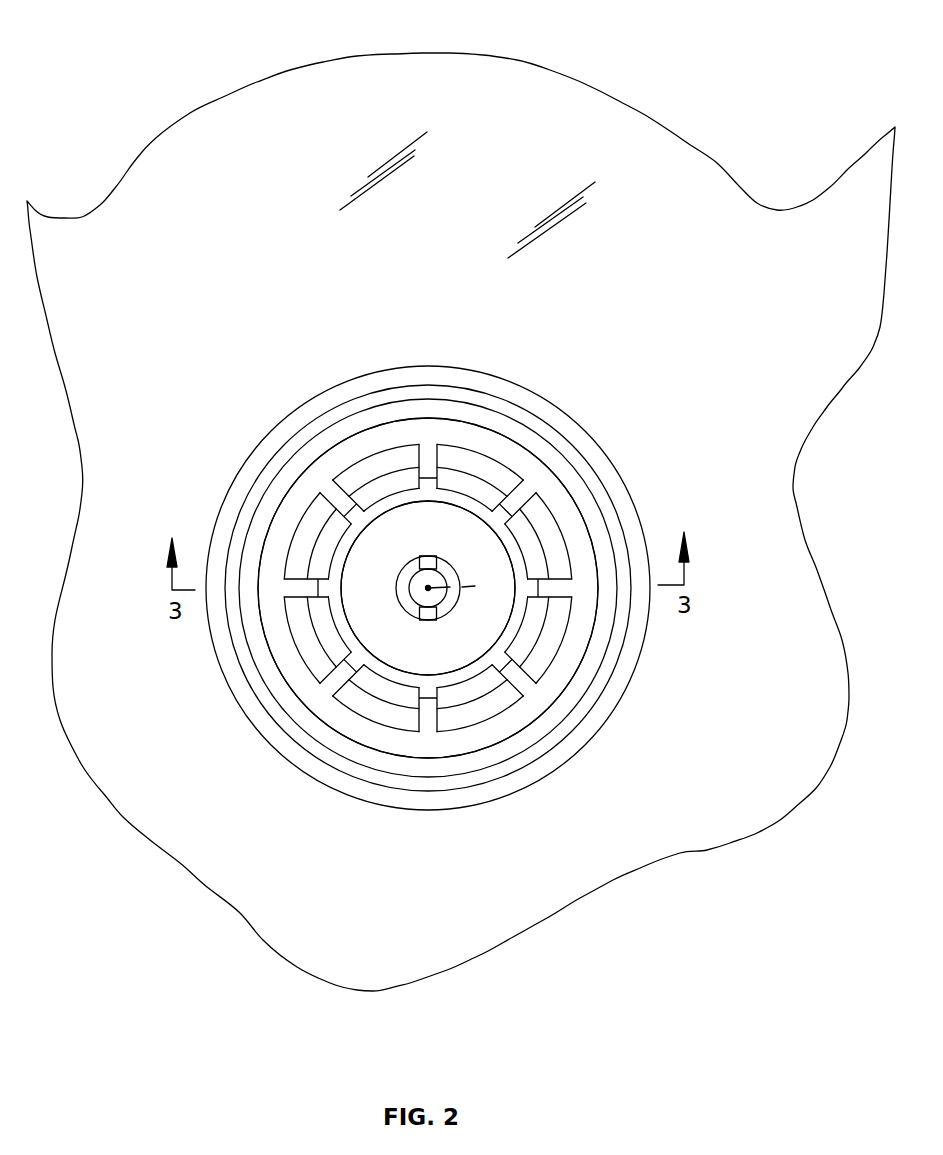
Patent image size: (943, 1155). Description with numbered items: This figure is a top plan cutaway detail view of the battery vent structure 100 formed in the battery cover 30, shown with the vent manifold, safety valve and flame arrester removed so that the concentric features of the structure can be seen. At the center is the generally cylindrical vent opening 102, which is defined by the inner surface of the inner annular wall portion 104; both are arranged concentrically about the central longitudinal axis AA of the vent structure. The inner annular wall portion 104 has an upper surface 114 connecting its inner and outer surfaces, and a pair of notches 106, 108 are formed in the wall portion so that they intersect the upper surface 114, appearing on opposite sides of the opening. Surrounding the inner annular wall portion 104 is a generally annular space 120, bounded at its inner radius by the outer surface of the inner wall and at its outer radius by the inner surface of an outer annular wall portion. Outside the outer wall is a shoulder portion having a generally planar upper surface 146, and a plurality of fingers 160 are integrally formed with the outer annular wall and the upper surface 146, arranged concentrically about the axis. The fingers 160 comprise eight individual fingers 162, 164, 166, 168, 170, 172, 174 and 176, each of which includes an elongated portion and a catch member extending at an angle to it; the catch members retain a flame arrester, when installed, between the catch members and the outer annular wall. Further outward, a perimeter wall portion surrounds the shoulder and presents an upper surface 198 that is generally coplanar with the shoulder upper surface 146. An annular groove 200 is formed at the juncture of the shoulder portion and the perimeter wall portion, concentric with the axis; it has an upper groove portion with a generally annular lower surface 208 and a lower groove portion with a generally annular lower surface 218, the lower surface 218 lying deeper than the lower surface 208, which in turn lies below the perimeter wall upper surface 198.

The battery cover 30 is at (541, 65).
The battery vent structure 100 is at (280, 291).
The vent opening 102 is at (402, 587).
The inner annular wall portion 104 is at (398, 572).
The notch 106 is at (430, 556).
The notch 108 is at (428, 618).
The upper surface 114 is at (452, 573).
The annular space 120 is at (388, 532).
The upper surface 146 is at (307, 483).
The fingers 160 is at (456, 440).
The finger 162 is at (313, 518).
The finger 164 is at (402, 462).
The finger 166 is at (492, 474).
The finger 168 is at (555, 553).
The finger 170 is at (546, 654).
The finger 172 is at (465, 722).
The finger 174 is at (362, 702).
The finger 176 is at (300, 623).
The upper surface 198 is at (397, 799).
The annular groove 200 is at (288, 702).
The lower surface 208 is at (300, 737).
The lower surface 218 is at (546, 727).